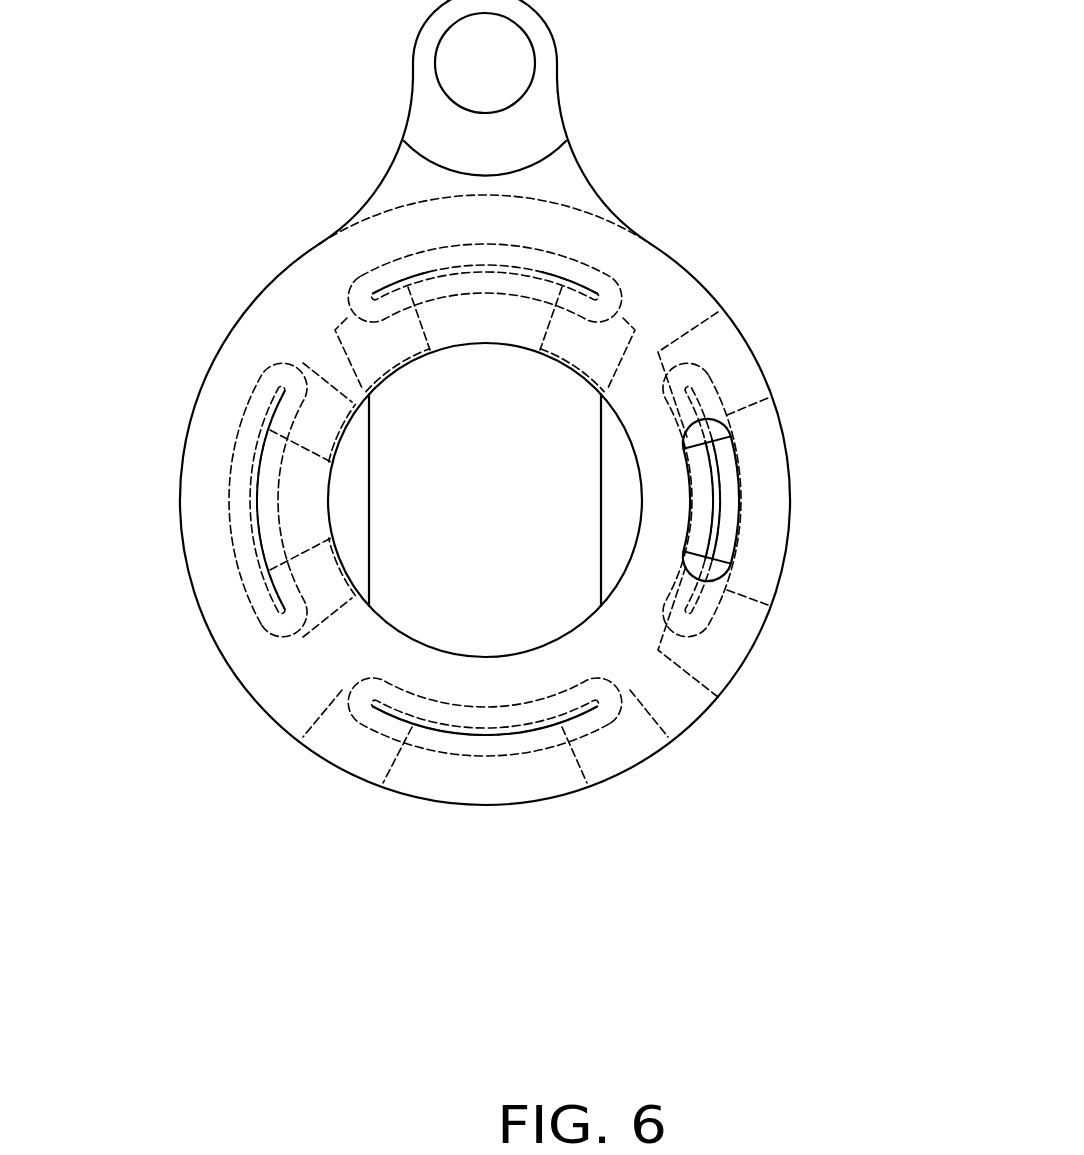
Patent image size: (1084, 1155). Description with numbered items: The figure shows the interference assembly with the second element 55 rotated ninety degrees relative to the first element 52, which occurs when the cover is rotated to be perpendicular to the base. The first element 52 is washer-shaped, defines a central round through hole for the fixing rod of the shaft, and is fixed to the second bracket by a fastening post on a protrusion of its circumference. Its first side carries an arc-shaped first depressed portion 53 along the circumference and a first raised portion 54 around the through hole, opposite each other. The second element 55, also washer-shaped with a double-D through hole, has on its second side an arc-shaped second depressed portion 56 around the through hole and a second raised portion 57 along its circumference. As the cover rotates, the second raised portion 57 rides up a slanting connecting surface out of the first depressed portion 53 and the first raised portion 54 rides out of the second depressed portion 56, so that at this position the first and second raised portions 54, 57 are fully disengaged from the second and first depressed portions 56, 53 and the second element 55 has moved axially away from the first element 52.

The first element 52 is at (563, 177).
The first depressed portion 53 is at (757, 507).
The first raised portion 54 is at (303, 500).
The second element 55 is at (655, 287).
The second depressed portion 56 is at (440, 320).
The second raised portion 57 is at (483, 787).